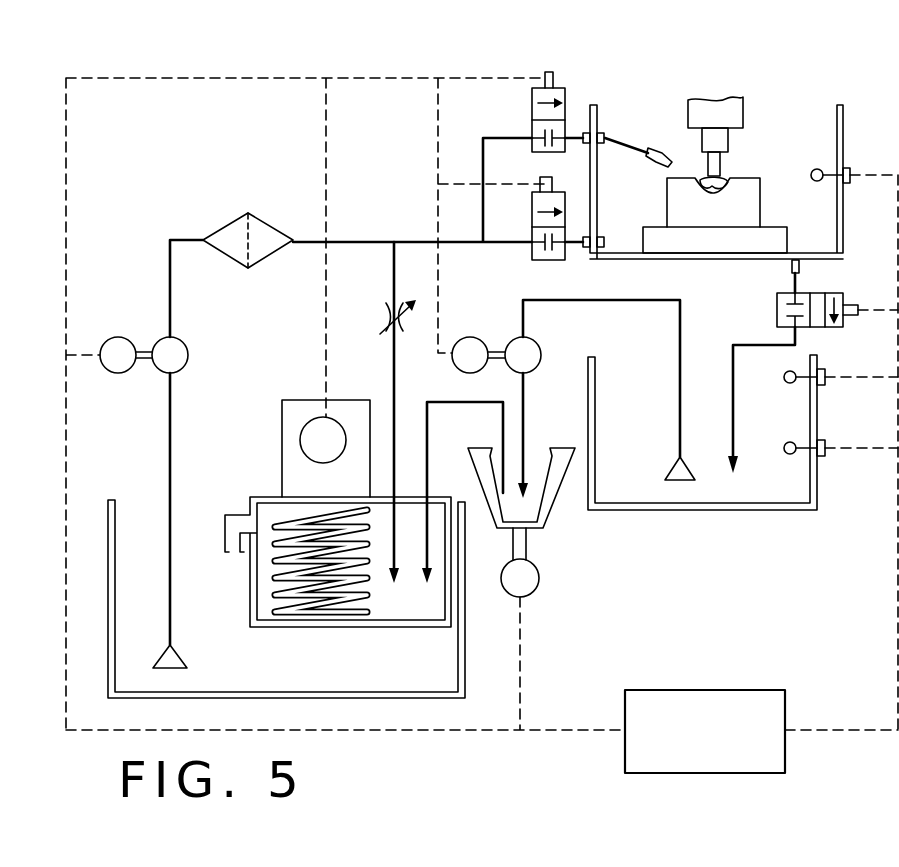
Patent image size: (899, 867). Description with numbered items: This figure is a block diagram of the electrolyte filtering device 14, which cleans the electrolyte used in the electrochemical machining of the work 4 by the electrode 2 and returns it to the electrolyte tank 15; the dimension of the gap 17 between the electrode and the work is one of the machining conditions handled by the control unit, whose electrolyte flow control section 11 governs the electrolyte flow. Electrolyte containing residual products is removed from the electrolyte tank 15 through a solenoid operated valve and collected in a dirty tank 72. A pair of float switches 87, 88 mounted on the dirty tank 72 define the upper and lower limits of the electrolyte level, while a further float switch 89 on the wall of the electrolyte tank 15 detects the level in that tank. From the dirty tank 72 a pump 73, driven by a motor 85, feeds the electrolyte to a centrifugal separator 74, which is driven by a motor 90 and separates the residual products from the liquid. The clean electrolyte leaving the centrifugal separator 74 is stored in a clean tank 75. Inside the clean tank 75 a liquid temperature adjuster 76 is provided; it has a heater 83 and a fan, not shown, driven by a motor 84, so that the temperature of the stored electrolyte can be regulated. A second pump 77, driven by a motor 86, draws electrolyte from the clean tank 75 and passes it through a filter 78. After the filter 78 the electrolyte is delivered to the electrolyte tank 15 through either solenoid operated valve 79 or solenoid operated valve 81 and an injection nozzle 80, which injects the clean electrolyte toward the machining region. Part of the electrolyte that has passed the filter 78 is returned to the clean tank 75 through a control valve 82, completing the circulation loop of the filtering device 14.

The electrode tool 2 is at (733, 178).
The workpiece 4 is at (761, 202).
The electrolyte flow control section 11 is at (760, 668).
The electrolyte filtering device 14 is at (196, 74).
The electrolyte tank 15 is at (845, 122).
The gap 17 is at (834, 296).
The dirty tank 72 is at (722, 510).
The pump 73 is at (542, 356).
The centrifugal separator 74 is at (548, 513).
The clean tank 75 is at (432, 700).
The liquid temperature adjuster 76 is at (248, 596).
The pump 77 is at (188, 358).
The filter 78 is at (232, 226).
The solenoid operated valve 79 is at (530, 255).
The injection nozzle 80 is at (666, 152).
The solenoid operated valve 81 is at (566, 92).
The control valve 82 is at (386, 311).
The heater 83 is at (332, 612).
The motor 84 is at (300, 443).
The motor 85 is at (488, 322).
The motor 86 is at (118, 337).
The float switch 87 is at (824, 387).
The float switch 88 is at (824, 458).
The float switch 89 is at (850, 170).
The motor 90 is at (528, 596).